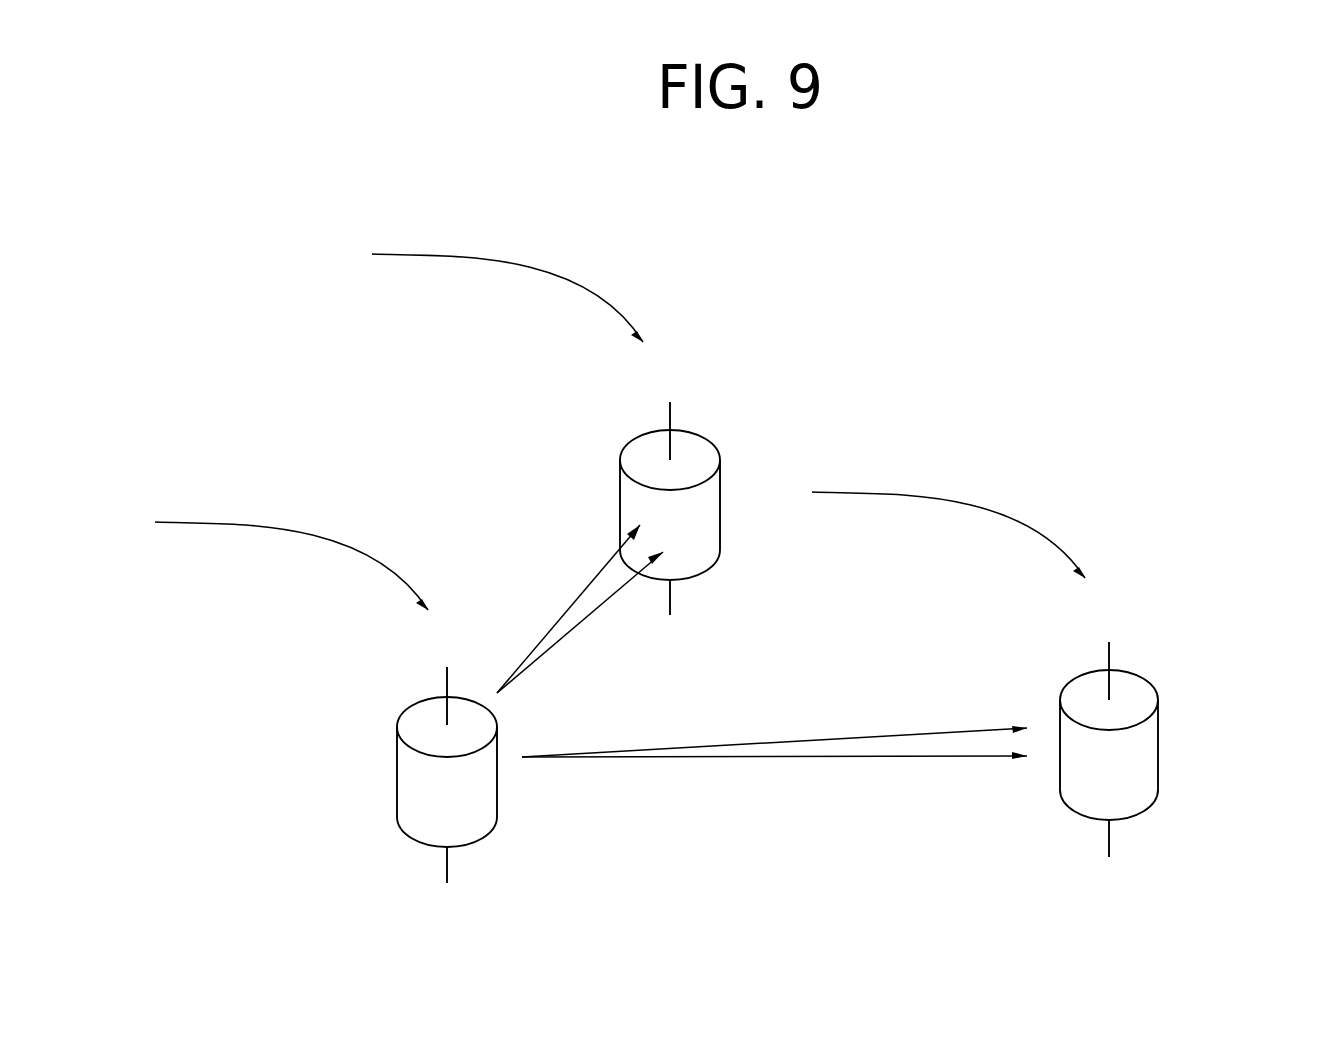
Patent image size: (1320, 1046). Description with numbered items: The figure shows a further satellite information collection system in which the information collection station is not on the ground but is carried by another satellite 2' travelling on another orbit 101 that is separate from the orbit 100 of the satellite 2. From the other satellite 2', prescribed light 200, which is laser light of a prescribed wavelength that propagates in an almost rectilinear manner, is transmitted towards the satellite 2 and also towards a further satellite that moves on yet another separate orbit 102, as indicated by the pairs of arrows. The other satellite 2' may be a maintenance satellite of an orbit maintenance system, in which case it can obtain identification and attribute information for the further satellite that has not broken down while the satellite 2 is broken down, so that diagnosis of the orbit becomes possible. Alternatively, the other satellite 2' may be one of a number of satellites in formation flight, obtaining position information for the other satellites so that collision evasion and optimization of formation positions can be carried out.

The satellite 2 is at (1156, 749).
The other satellite 2' is at (400, 775).
The orbit 100 is at (957, 501).
The orbit 101 is at (300, 532).
The orbit 102 is at (517, 263).
The prescribed light 200 is at (562, 617).